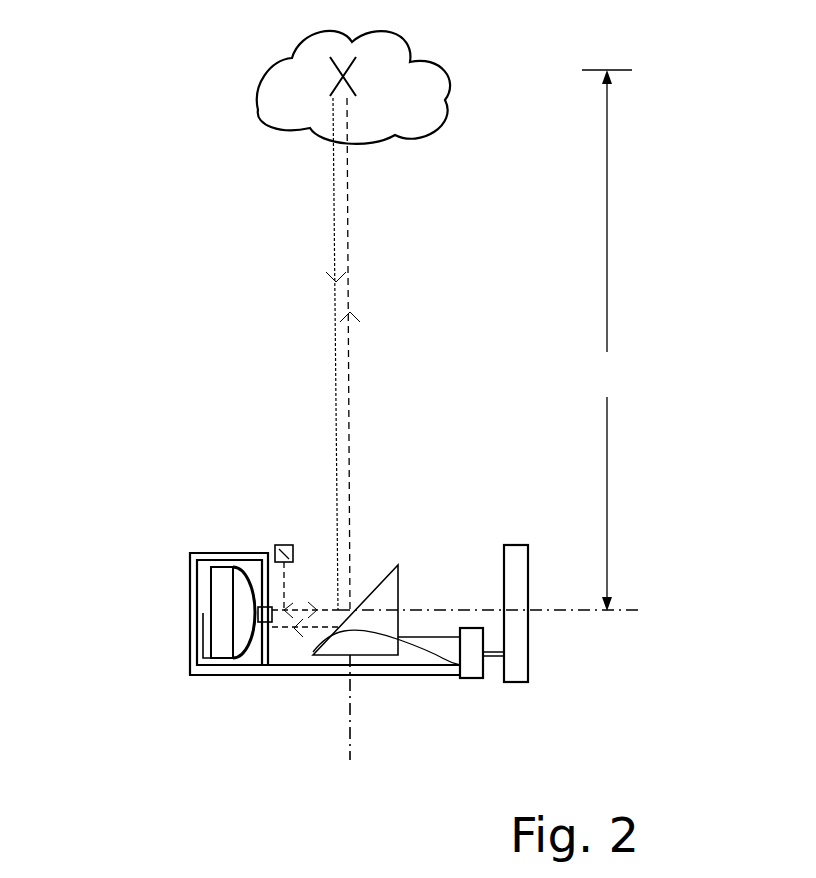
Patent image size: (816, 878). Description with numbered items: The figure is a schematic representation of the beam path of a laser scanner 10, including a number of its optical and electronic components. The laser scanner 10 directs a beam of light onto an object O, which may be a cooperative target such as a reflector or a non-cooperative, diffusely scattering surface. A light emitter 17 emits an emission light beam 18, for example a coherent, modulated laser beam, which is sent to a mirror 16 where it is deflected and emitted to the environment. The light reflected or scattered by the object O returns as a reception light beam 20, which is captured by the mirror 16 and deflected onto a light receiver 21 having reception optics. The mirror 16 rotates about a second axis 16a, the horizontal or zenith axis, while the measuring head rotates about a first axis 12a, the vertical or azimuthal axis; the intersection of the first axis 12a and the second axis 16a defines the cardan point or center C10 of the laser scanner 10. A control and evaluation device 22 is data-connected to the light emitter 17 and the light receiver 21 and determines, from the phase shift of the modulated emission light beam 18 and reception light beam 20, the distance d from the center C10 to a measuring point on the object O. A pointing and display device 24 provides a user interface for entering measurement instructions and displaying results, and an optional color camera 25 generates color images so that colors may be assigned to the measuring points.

The laser scanner 10 is at (156, 232).
The first axis 12a is at (350, 740).
The mirror 16 is at (528, 660).
The second axis 16a is at (643, 612).
The light emitter 17 is at (283, 545).
The emission light beam 18 is at (350, 262).
The reception light beam 20 is at (337, 310).
The light receiver 21 is at (212, 660).
The control and evaluation device 22 is at (190, 610).
The pointing and display device 24 is at (528, 657).
The color camera 25 is at (265, 622).
The center C10 is at (350, 603).
The object O is at (452, 68).
The distance d is at (607, 340).